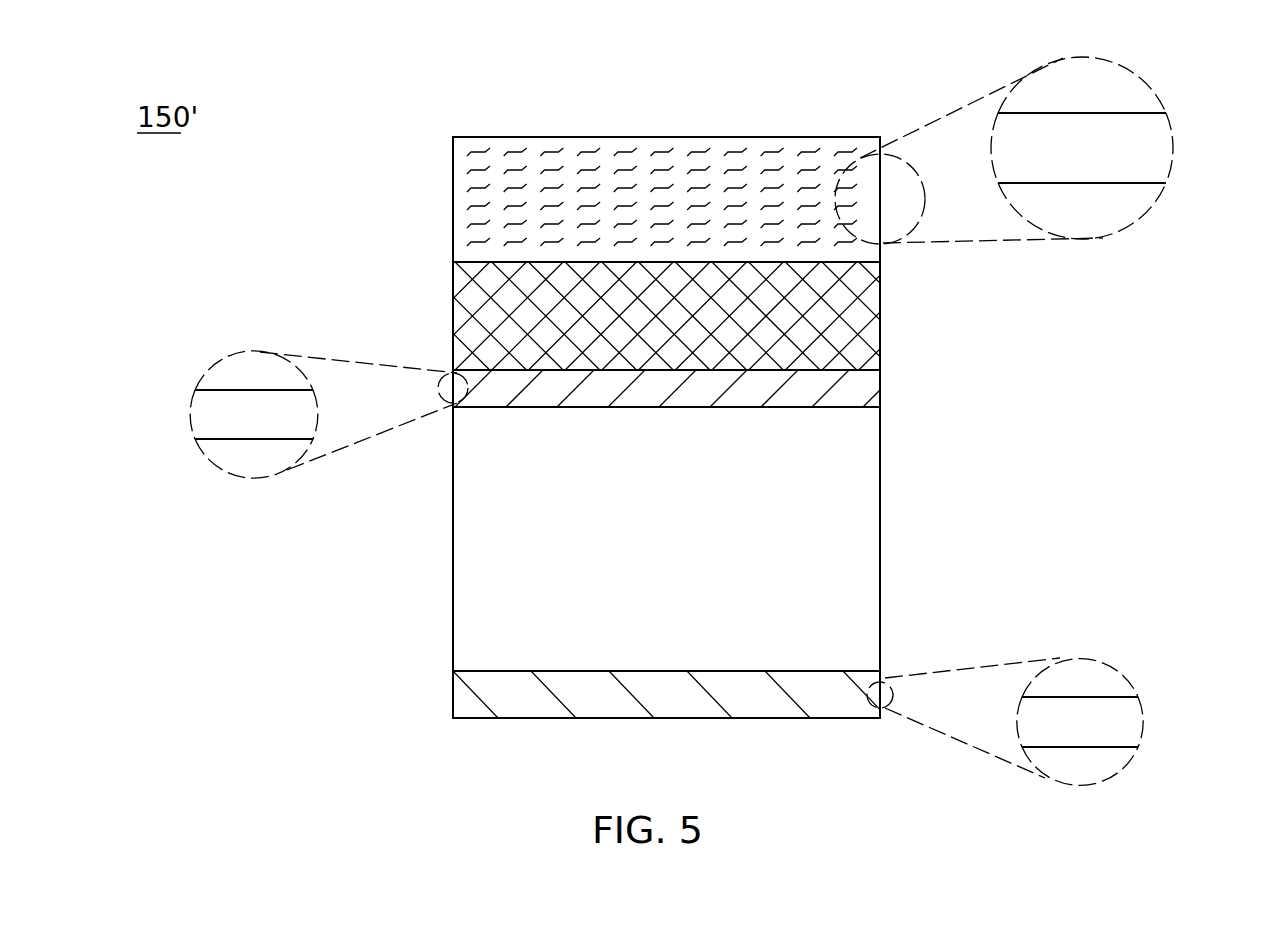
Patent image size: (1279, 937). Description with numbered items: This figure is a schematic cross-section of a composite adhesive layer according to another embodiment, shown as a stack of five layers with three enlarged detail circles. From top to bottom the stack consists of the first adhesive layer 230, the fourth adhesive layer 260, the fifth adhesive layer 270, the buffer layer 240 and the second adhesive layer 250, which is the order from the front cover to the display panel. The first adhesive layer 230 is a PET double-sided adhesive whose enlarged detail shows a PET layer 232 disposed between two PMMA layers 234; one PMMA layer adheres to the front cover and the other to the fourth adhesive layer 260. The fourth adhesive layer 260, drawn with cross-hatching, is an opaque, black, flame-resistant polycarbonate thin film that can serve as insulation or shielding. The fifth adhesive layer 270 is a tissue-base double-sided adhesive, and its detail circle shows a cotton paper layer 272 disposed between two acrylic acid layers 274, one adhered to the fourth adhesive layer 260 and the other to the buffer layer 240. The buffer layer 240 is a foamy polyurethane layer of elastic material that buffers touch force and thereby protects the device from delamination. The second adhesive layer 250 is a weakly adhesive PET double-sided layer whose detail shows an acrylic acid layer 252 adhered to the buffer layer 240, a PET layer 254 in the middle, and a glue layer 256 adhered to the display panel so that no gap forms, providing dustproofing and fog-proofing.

The first adhesive layer 230 is at (470, 193).
The PET layer 232 is at (1155, 150).
The PMMA layers 234 is at (1123, 92).
The buffer layer 240 is at (863, 535).
The second adhesive layer 250 is at (470, 697).
The acrylic acid layer 252 is at (1110, 680).
The PET layer 254 is at (1130, 718).
The glue layer 256 is at (1110, 762).
The fourth adhesive layer 260 is at (863, 312).
The fifth adhesive layer 270 is at (863, 388).
The cotton paper layer 272 is at (202, 413).
The acrylic acid layers 274 is at (225, 372).